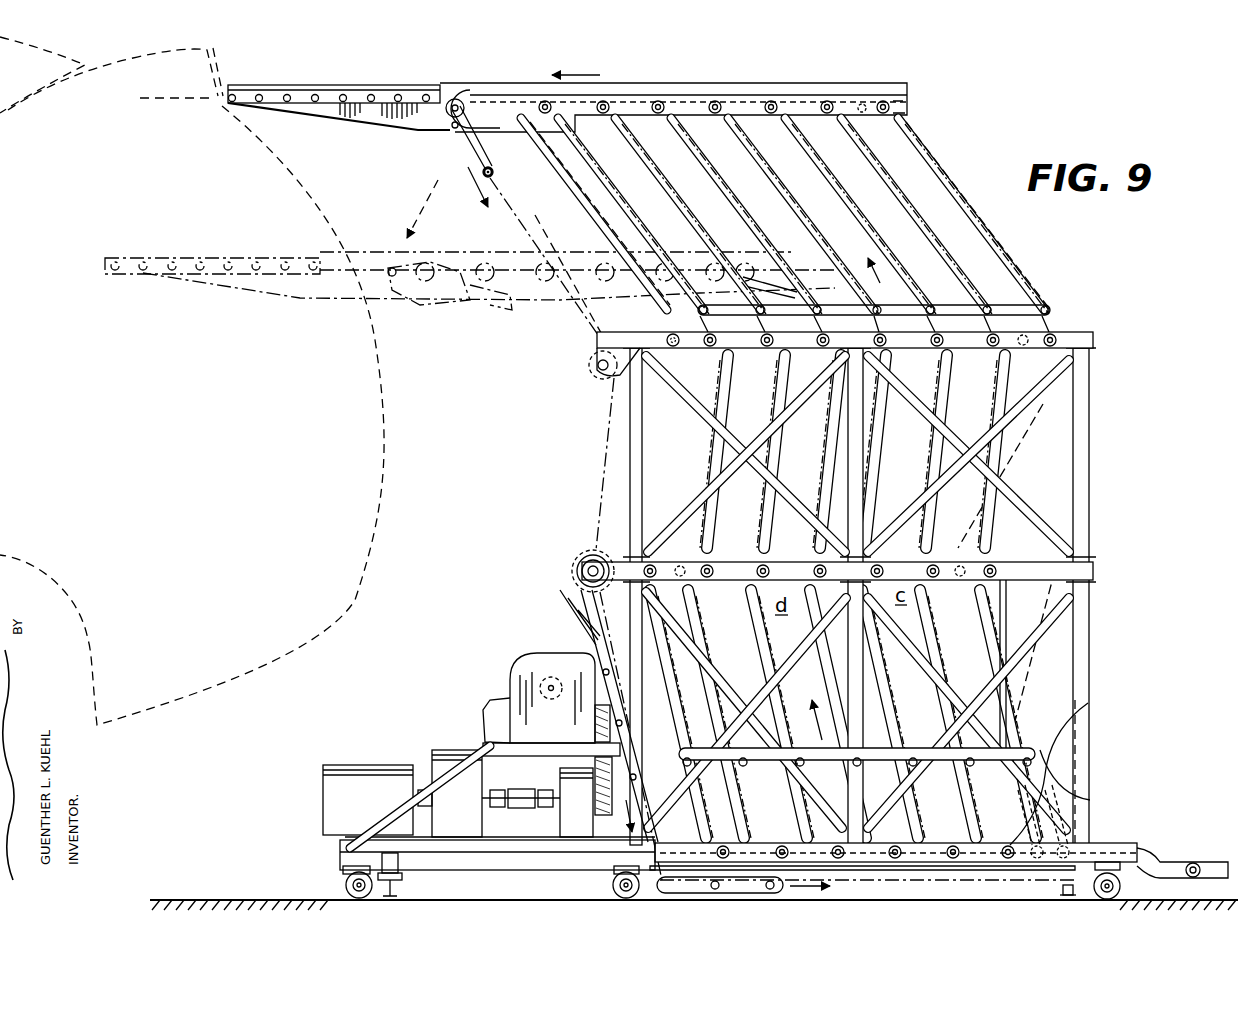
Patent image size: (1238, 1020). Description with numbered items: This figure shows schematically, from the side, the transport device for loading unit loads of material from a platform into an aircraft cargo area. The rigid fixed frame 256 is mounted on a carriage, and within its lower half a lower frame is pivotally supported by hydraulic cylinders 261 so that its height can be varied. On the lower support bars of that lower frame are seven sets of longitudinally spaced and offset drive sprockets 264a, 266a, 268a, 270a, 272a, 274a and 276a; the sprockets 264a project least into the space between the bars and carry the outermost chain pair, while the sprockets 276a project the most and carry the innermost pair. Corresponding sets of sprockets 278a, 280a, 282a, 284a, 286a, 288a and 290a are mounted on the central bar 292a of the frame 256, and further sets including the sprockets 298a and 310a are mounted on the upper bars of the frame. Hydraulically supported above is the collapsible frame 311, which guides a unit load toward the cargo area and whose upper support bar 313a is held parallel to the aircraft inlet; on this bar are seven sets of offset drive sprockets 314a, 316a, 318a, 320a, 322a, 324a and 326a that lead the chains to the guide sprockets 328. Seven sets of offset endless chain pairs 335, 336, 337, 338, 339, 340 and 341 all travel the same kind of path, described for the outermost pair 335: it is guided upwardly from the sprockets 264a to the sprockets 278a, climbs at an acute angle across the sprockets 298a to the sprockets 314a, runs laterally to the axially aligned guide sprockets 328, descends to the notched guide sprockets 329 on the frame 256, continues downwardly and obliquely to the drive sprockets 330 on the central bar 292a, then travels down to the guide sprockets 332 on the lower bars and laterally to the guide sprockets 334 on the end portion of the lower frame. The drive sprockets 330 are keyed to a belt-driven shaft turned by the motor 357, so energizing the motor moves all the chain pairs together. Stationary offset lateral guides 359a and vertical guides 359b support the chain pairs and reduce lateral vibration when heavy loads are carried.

The collapsible frame 311 is at (970, 142).
The guide sprockets 328 is at (458, 96).
The drive sprocket 326a is at (540, 100).
The drive sprocket 324a is at (604, 100).
The drive sprocket 322a is at (664, 100).
The drive sprocket 320a is at (718, 100).
The drive sprocket 318a is at (776, 100).
The drive sprocket 316a is at (831, 100).
The upper support bar 313a is at (888, 100).
The drive sprocket 314a is at (895, 108).
The lateral guide 359a is at (450, 150).
The vertical guide 359b is at (963, 253).
The sprocket 298a is at (1055, 338).
The sprocket 310a is at (700, 360).
The notched sprockets 329 is at (598, 364).
The fixed frame 256 is at (1092, 377).
The sprocket 288a is at (738, 548).
The sprocket 286a is at (793, 555).
The sprocket 284a is at (820, 512).
The sprocket 282a is at (896, 536).
The sprocket 280a is at (957, 548).
The sprocket 278a is at (1005, 562).
The central bar 292a is at (1094, 573).
The drive sprockets 330 is at (586, 563).
The sprocket 290a is at (590, 556).
The endless chain pair 341 is at (706, 684).
The endless chain pair 340 is at (712, 650).
The endless chain pair 339 is at (800, 696).
The endless chain pair 337 is at (918, 706).
The endless chain pair 336 is at (957, 668).
The outermost endless chain pair 335 is at (992, 620).
The hydraulic cylinders 261 is at (985, 643).
The endless chain pair 338 is at (860, 753).
The drive sprocket 276a is at (726, 845).
The drive sprocket 274a is at (782, 845).
The drive sprocket 272a is at (822, 804).
The drive sprocket 270a is at (910, 838).
The drive sprocket 268a is at (953, 845).
The drive sprocket 266a is at (1045, 830).
The drive sprocket 264a is at (1068, 842).
The guide sprockets 332 is at (613, 878).
The guide sprockets 334 is at (1193, 862).
The motor 357 is at (518, 672).